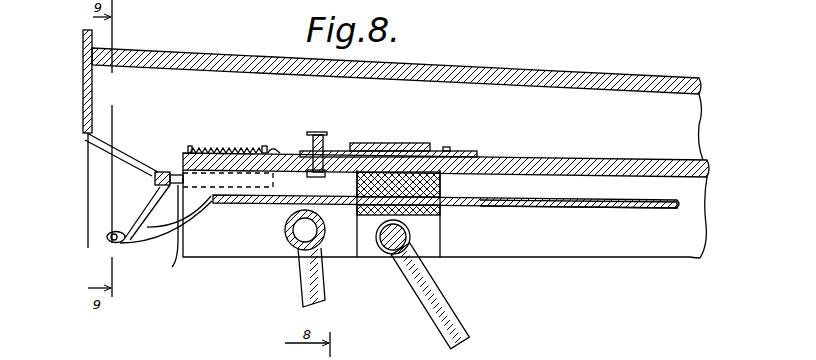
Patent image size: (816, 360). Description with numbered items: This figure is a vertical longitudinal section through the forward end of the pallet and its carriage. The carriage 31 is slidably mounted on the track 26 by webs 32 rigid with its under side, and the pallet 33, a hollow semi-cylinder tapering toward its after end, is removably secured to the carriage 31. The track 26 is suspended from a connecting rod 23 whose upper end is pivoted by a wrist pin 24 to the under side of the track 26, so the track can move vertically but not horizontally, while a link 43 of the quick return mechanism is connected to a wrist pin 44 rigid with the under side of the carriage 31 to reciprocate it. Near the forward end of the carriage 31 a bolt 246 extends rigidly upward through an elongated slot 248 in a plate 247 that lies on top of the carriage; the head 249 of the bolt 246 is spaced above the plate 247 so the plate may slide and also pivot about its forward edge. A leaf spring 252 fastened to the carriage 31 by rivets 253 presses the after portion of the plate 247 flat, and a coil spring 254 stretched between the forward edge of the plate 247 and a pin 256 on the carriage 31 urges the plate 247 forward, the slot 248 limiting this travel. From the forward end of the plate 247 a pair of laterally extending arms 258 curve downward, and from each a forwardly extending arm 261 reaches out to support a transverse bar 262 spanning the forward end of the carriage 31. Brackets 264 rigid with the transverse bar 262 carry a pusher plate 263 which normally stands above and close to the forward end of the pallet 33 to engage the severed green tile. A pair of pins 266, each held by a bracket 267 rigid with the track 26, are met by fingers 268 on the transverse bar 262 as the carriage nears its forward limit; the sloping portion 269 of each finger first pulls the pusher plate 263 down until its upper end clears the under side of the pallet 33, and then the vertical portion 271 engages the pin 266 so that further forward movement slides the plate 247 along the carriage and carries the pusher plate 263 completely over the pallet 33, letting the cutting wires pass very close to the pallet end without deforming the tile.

The connecting rod 23 is at (308, 288).
The wrist pin 24 is at (303, 233).
The track 26 is at (607, 208).
The carriage 31 is at (602, 165).
The webs 32 is at (442, 190).
The pallet 33 is at (183, 50).
The link 43 is at (447, 297).
The wrist pin 44 is at (390, 245).
The bolt 246 is at (307, 134).
The plate 247 is at (339, 150).
The elongated slot 248 is at (283, 148).
The head 249 is at (318, 132).
The leaf spring 252 is at (417, 143).
The rivets 253 is at (470, 152).
The coil spring 254 is at (205, 150).
The pin 256 is at (187, 147).
The laterally extending arms 258 is at (254, 213).
The forwardly extending arm 261 is at (179, 234).
The transverse bar 262 is at (154, 181).
The pusher plate 263 is at (83, 78).
The brackets 264 is at (100, 147).
The pins 266 is at (107, 237).
The bracket 267 is at (200, 222).
The fingers 268 is at (127, 215).
The sloping portion 269 is at (133, 243).
The vertical portion 271 is at (159, 192).